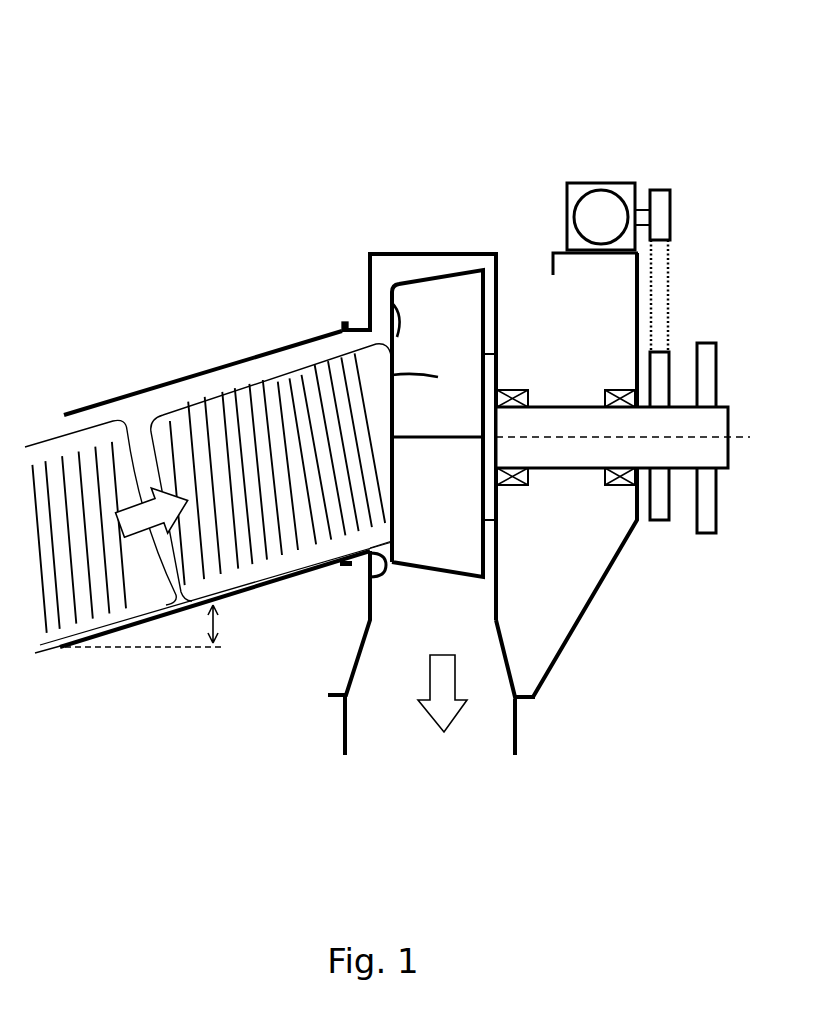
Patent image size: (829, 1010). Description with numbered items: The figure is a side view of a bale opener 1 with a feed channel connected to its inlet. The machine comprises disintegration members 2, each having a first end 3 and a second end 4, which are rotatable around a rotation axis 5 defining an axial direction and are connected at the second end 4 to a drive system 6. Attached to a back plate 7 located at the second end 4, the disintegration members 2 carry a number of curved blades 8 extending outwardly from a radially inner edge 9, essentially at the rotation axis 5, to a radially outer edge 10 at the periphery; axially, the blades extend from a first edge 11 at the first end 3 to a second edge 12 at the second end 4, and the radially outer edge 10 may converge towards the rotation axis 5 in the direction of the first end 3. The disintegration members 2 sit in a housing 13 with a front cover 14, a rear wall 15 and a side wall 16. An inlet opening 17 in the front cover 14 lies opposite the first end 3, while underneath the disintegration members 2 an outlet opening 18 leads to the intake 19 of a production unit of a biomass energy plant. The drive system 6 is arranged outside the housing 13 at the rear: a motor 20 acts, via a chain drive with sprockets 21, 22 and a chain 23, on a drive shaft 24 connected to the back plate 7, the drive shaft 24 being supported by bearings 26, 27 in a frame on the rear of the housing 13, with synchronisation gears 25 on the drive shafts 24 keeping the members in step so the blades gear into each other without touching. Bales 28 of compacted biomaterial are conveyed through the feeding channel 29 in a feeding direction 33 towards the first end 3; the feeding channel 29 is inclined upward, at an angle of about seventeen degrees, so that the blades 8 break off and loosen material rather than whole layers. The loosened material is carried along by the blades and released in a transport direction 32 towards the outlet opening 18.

The bale opener 1 is at (325, 51).
The disintegration member 2 is at (418, 288).
The first end 3 is at (387, 323).
The second end 4 is at (479, 314).
The rotation axis 5 is at (550, 437).
The drive system 6 is at (728, 777).
The back plate 7 is at (498, 372).
The curved blades 8 is at (392, 376).
The radially inner edge 9 is at (447, 437).
The radially outer edge 10 is at (438, 318).
The first edge 11 is at (388, 328).
The second edge 12 is at (487, 330).
The housing 13 is at (353, 658).
The front cover 14 is at (367, 592).
The rear wall 15 is at (497, 530).
The side wall 16 is at (438, 343).
The inlet opening 17 is at (280, 463).
The outlet opening 18 is at (398, 695).
The intake 19 is at (512, 722).
The motor 20 is at (602, 208).
The sprocket 21 is at (660, 205).
The sprocket 22 is at (658, 493).
The chain 23 is at (662, 288).
The drive shaft 24 is at (587, 447).
The synchronisation gears 25 is at (706, 500).
The bearing 26 is at (508, 487).
The bearing 27 is at (623, 487).
The bales 28 is at (377, 468).
The feeding channel 29 is at (280, 585).
The transport direction 32 is at (445, 682).
The feeding direction 33 is at (130, 480).